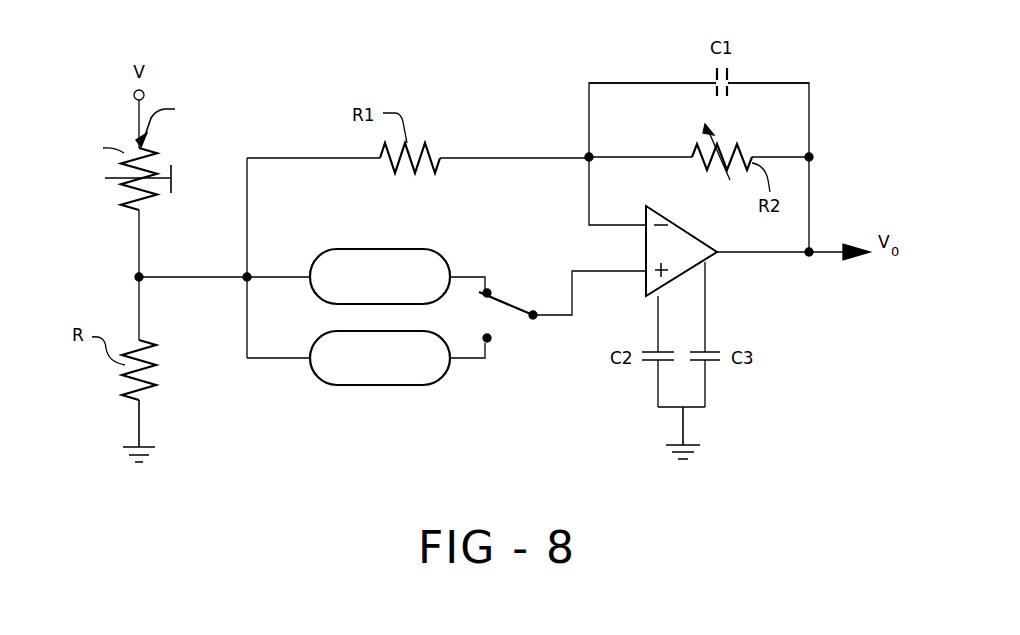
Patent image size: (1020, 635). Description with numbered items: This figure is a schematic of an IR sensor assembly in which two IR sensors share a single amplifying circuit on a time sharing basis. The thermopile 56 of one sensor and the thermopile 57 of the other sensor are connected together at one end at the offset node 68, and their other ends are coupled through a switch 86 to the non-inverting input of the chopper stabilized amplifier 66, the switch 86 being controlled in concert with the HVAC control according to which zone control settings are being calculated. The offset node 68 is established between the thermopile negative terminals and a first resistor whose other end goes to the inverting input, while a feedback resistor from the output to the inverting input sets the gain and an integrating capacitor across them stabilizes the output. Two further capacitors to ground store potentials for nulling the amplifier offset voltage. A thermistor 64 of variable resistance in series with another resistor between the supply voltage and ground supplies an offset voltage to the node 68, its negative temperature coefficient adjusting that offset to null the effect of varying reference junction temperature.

The thermistor 64 is at (142, 154).
The offset node 68 is at (245, 279).
The thermopile 56 is at (416, 248).
The thermopile 57 is at (397, 384).
The switch 86 is at (503, 298).
The chopper stabilized amplifier 66 is at (704, 253).